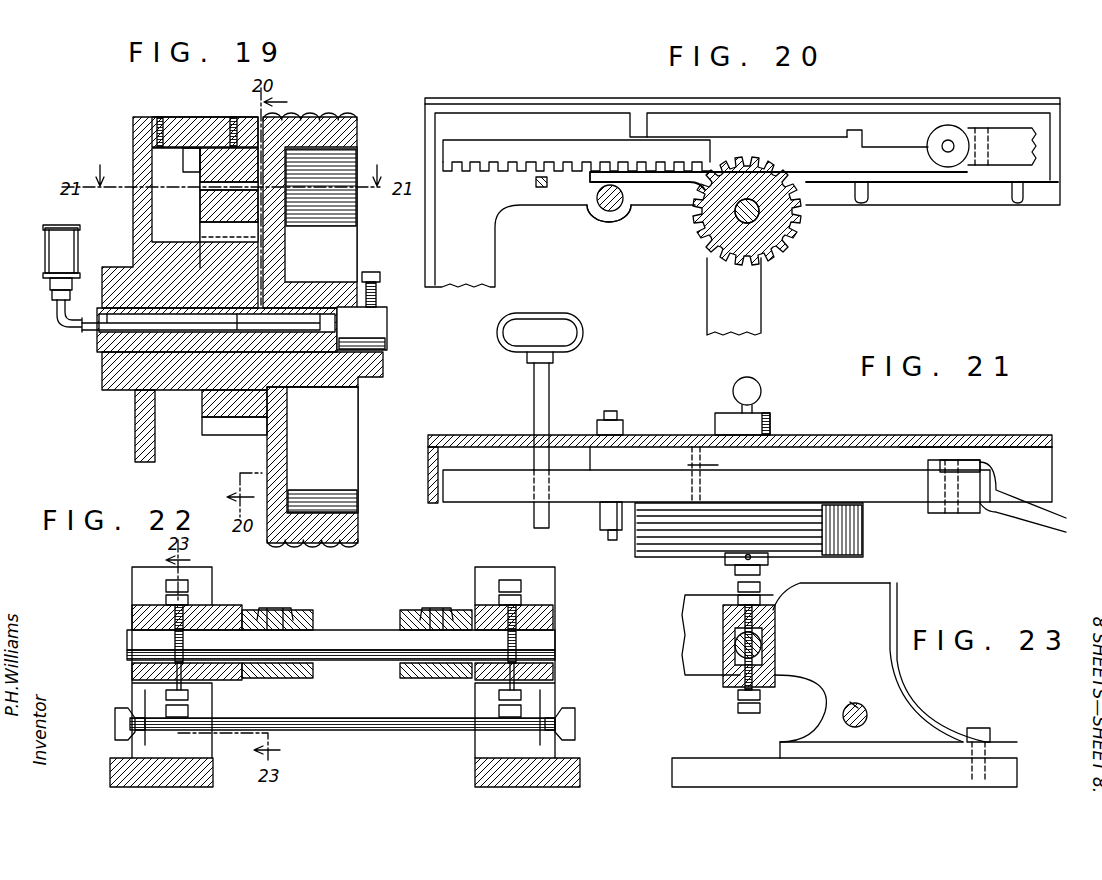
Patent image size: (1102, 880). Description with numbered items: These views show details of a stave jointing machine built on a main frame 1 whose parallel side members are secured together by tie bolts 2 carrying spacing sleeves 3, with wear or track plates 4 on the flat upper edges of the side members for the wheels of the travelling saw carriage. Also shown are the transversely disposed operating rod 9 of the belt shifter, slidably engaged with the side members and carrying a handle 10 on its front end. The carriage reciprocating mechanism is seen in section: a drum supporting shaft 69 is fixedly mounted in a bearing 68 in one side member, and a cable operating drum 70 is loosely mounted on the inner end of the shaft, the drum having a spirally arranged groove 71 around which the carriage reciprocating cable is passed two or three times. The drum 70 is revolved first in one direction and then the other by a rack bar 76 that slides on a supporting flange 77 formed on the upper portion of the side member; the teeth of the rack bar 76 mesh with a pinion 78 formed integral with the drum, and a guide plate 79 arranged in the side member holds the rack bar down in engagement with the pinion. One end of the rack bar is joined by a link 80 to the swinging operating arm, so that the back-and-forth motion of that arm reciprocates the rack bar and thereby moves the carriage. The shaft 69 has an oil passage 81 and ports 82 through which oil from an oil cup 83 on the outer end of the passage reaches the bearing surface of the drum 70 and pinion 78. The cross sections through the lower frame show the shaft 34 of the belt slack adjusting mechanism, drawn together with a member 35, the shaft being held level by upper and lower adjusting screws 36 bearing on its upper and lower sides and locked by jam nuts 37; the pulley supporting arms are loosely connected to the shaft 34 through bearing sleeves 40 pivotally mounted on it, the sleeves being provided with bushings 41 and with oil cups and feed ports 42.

In FIG. 19, the main frame 1 is at (136, 160).
In FIG. 20, the main frame 1 is at (488, 120).
In FIG. 21, the main frame 1 is at (652, 435).
In FIG. 22, the main frame 1 is at (135, 592).
In FIG. 23, the main frame 1 is at (872, 618).
In FIG. 20, the tie bolts 2 is at (605, 213).
In FIG. 21, the tie bolts 2 is at (612, 545).
In FIG. 22, the tie bolts 2 is at (114, 722).
In FIG. 23, the tie bolts 2 is at (855, 702).
In FIG. 20, the spacing sleeves 3 is at (614, 213).
In FIG. 21, the spacing sleeves 3 is at (606, 515).
In FIG. 22, the spacing sleeves 3 is at (342, 731).
In FIG. 23, the spacing sleeves 3 is at (867, 718).
In FIG. 19, the wear or track plates 4 is at (190, 117).
In FIG. 20, the wear or track plates 4 is at (562, 100).
In FIG. 20, the operating rod 9 is at (541, 190).
In FIG. 21, the operating rod 9 is at (550, 400).
In FIG. 21, the handle 10 is at (548, 314).
In FIG. 22, the shaft 34 is at (346, 661).
In FIG. 23, the shaft 34 is at (762, 648).
In FIG. 22, the clamp block 35 is at (128, 636).
In FIG. 23, the clamp block 35 is at (777, 631).
In FIG. 22, the adjusting screws 36 is at (190, 586).
In FIG. 23, the adjusting screws 36 is at (762, 583).
In FIG. 22, the jam nuts 37 is at (190, 600).
In FIG. 23, the jam nuts 37 is at (737, 598).
In FIG. 22, the bearing sleeves 40 is at (265, 678).
In FIG. 22, the bushings 41 is at (314, 630).
In FIG. 22, the oil cups and feed ports 42 is at (272, 612).
In FIG. 19, the bearing 68 is at (118, 384).
In FIG. 21, the bearing 68 is at (775, 424).
In FIG. 19, the drum supporting shaft 69 is at (373, 322).
In FIG. 20, the drum supporting shaft 69 is at (742, 224).
In FIG. 21, the drum supporting shaft 69 is at (733, 566).
In FIG. 19, the cable operating drum 70 is at (357, 120).
In FIG. 21, the cable operating drum 70 is at (830, 512).
In FIG. 19, the spirally arranged groove 71 is at (318, 117).
In FIG. 21, the spirally arranged groove 71 is at (872, 541).
In FIG. 19, the rack bar 76 is at (208, 200).
In FIG. 20, the rack bar 76 is at (545, 148).
In FIG. 21, the rack bar 76 is at (716, 486).
In FIG. 20, the supporting flange 77 is at (670, 180).
In FIG. 21, the supporting flange 77 is at (918, 446).
In FIG. 19, the pinion 78 is at (220, 392).
In FIG. 20, the pinion 78 is at (752, 268).
In FIG. 21, the pinion 78 is at (715, 502).
In FIG. 19, the guide plate 79 is at (205, 155).
In FIG. 20, the guide plate 79 is at (775, 125).
In FIG. 20, the link 80 is at (1012, 130).
In FIG. 21, the link 80 is at (1024, 522).
In FIG. 19, the oil passage 81 is at (115, 368).
In FIG. 20, the oil passage 81 is at (718, 238).
In FIG. 19, the ports 82 is at (286, 275).
In FIG. 19, the oil cup 83 is at (46, 250).